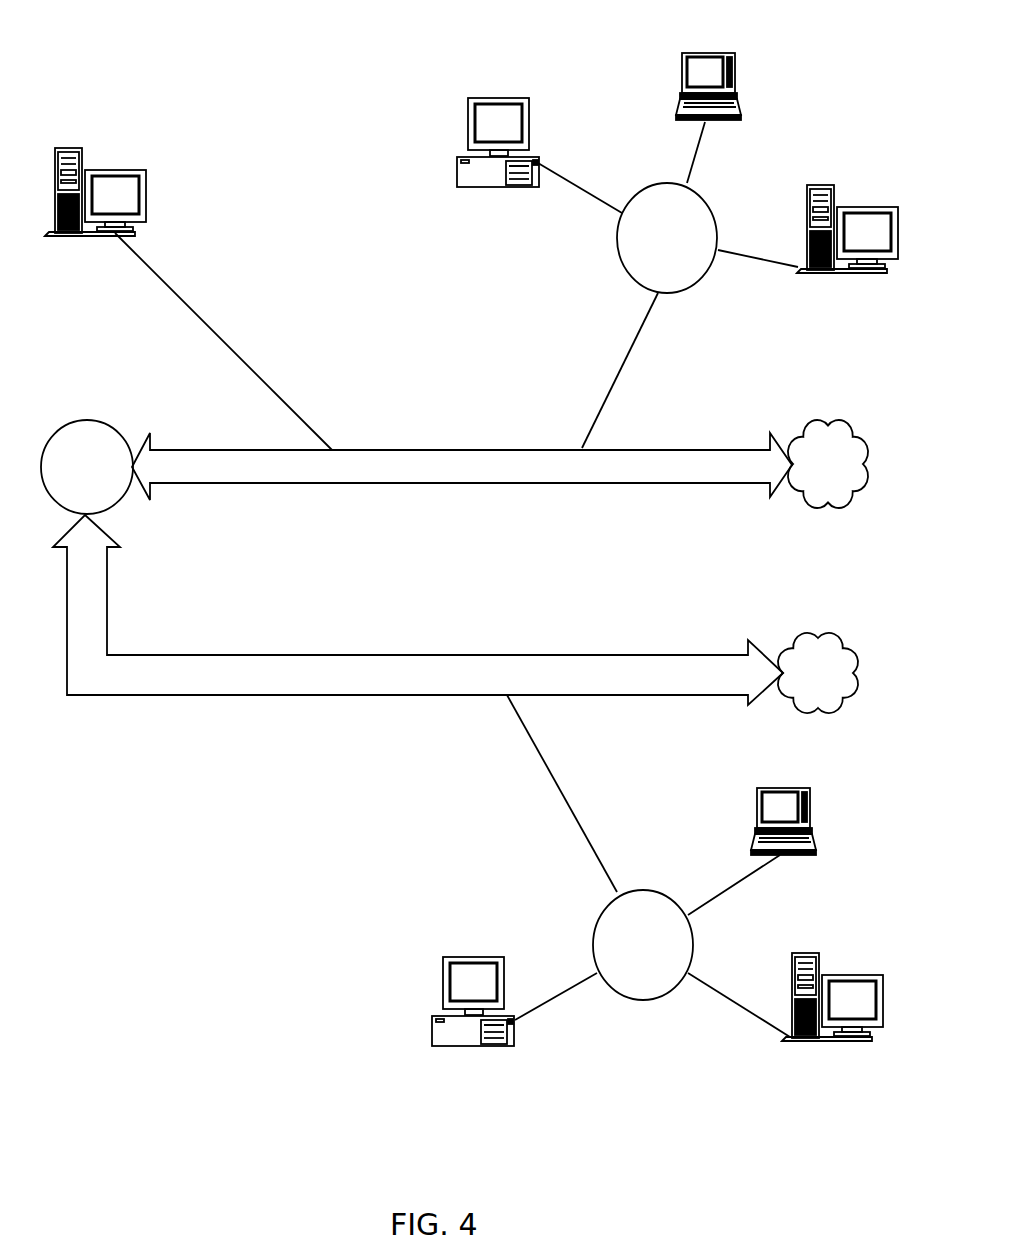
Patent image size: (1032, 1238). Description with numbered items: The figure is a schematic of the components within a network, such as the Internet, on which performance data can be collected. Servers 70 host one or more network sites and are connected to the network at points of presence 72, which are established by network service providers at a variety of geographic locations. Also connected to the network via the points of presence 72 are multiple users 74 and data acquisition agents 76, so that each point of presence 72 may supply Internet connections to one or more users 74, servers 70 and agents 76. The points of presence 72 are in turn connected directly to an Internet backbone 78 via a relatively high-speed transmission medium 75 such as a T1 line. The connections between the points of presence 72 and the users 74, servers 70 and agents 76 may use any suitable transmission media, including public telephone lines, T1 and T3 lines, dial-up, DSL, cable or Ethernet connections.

The server 70 is at (135, 172).
The point of presence (POP) 72 is at (697, 220).
The user 74 is at (713, 53).
The high-speed transmission medium 75 is at (620, 375).
The data acquisition agent 76 is at (517, 103).
The Internet backbone 78 is at (432, 483).